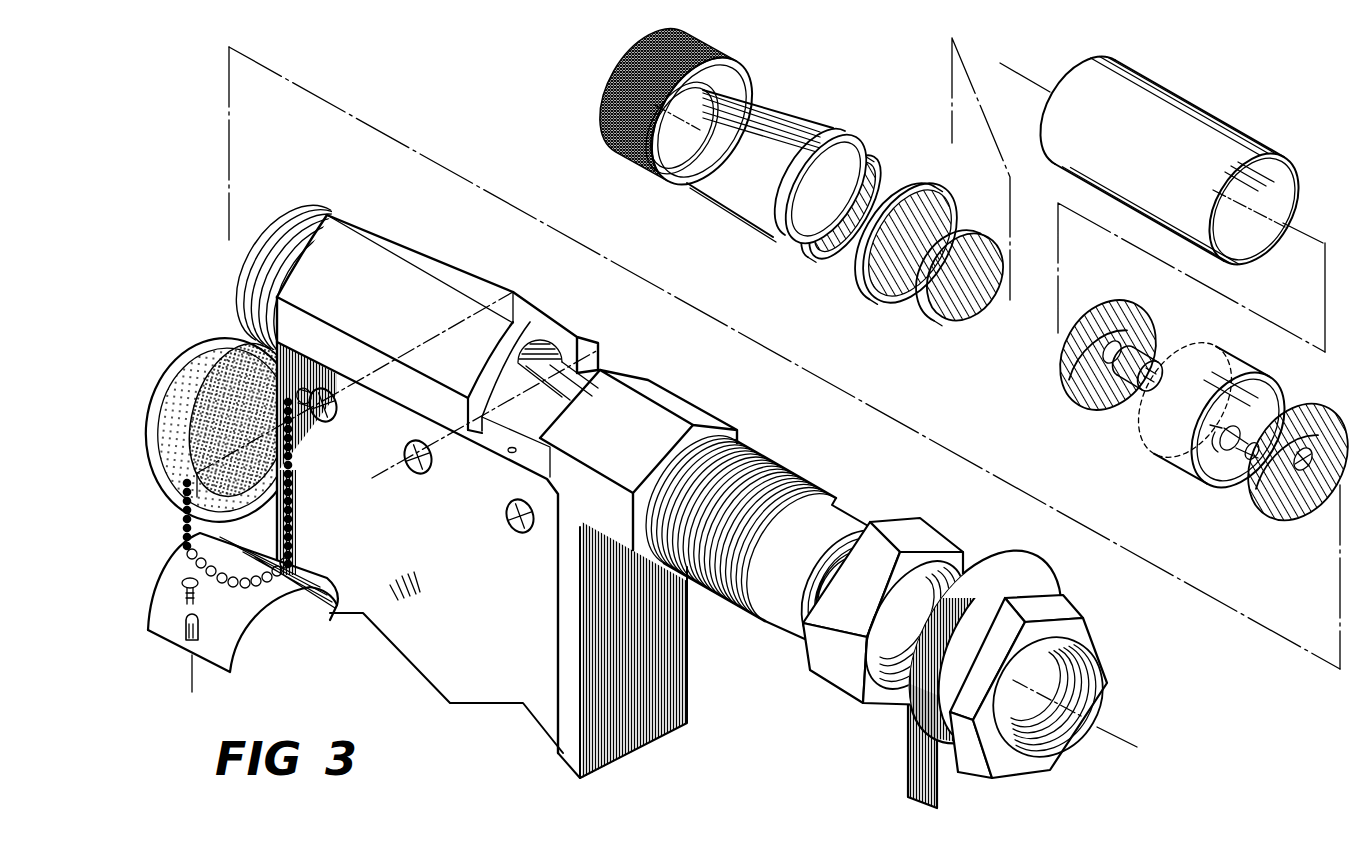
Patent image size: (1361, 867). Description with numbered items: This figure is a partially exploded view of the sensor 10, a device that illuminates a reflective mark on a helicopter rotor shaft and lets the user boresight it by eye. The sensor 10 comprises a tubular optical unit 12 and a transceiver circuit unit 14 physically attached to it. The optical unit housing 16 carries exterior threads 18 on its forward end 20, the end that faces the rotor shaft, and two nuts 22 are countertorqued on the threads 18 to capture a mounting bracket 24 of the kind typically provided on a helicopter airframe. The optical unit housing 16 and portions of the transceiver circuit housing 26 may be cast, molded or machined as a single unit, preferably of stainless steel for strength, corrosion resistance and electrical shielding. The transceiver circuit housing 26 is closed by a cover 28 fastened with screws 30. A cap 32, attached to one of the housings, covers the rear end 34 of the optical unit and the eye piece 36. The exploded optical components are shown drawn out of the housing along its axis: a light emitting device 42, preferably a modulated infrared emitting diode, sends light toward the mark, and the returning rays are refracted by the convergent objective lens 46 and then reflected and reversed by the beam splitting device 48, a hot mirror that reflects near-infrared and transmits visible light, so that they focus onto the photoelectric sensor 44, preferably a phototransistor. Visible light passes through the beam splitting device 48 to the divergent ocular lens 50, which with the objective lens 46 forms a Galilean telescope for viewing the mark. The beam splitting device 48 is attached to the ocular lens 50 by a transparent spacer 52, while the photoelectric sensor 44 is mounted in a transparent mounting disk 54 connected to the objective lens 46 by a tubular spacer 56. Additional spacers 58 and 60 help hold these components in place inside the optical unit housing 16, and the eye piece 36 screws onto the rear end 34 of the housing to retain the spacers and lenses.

The sensor 10 is at (500, 88).
The tubular optical unit 12 is at (385, 238).
The transceiver circuit unit 14 is at (410, 668).
The optical unit housing 16 is at (470, 280).
The exterior threads 18 is at (760, 468).
The forward end 20 is at (820, 492).
The nuts 22 is at (905, 535).
The mounting bracket 24 is at (1020, 577).
The transceiver circuit housing 26 is at (575, 756).
The cover 28 is at (458, 618).
The screws 30 is at (414, 470).
The cap 32 is at (190, 366).
The rear end 34 is at (314, 210).
The eye piece 36 is at (606, 134).
The light emitting device 42 is at (1232, 456).
The photoelectric sensor 44 is at (1102, 414).
The objective lens 46 is at (1276, 518).
The beam splitting device 48 is at (937, 297).
The ocular lens 50 is at (860, 162).
The transparent spacer 52 is at (926, 196).
The transparent mounting disk 54 is at (1060, 377).
The tubular spacer 56 is at (1163, 436).
The spacer 58 is at (1212, 118).
The spacer 60 is at (752, 92).